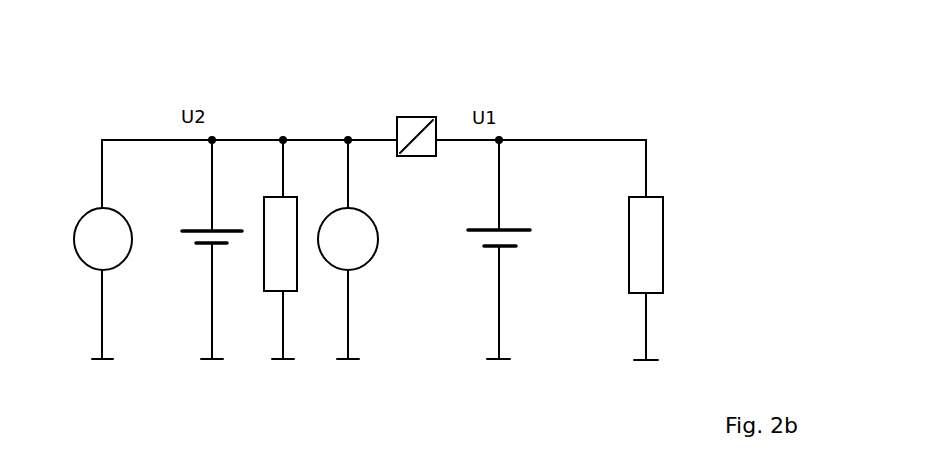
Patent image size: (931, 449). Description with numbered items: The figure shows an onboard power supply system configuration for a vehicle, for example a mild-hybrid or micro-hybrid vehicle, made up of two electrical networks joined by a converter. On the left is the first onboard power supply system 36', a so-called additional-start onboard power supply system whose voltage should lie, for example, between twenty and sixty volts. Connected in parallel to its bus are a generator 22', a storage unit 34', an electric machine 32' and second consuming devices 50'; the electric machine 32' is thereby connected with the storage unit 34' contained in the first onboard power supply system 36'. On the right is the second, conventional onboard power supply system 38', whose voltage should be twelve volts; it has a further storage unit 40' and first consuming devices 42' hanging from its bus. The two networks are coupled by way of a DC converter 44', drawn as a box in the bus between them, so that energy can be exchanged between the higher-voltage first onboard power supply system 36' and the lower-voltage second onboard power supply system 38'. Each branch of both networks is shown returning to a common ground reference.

The generator 22' is at (72, 249).
The electric machine 32' is at (364, 249).
The storage unit 34' is at (195, 249).
The first onboard power supply system 36' is at (249, 78).
The second onboard power supply system 38' is at (541, 81).
The further storage unit 40' is at (510, 249).
The first consuming devices 42' is at (672, 250).
The DC converter 44' is at (427, 109).
The second consuming devices 50' is at (294, 249).